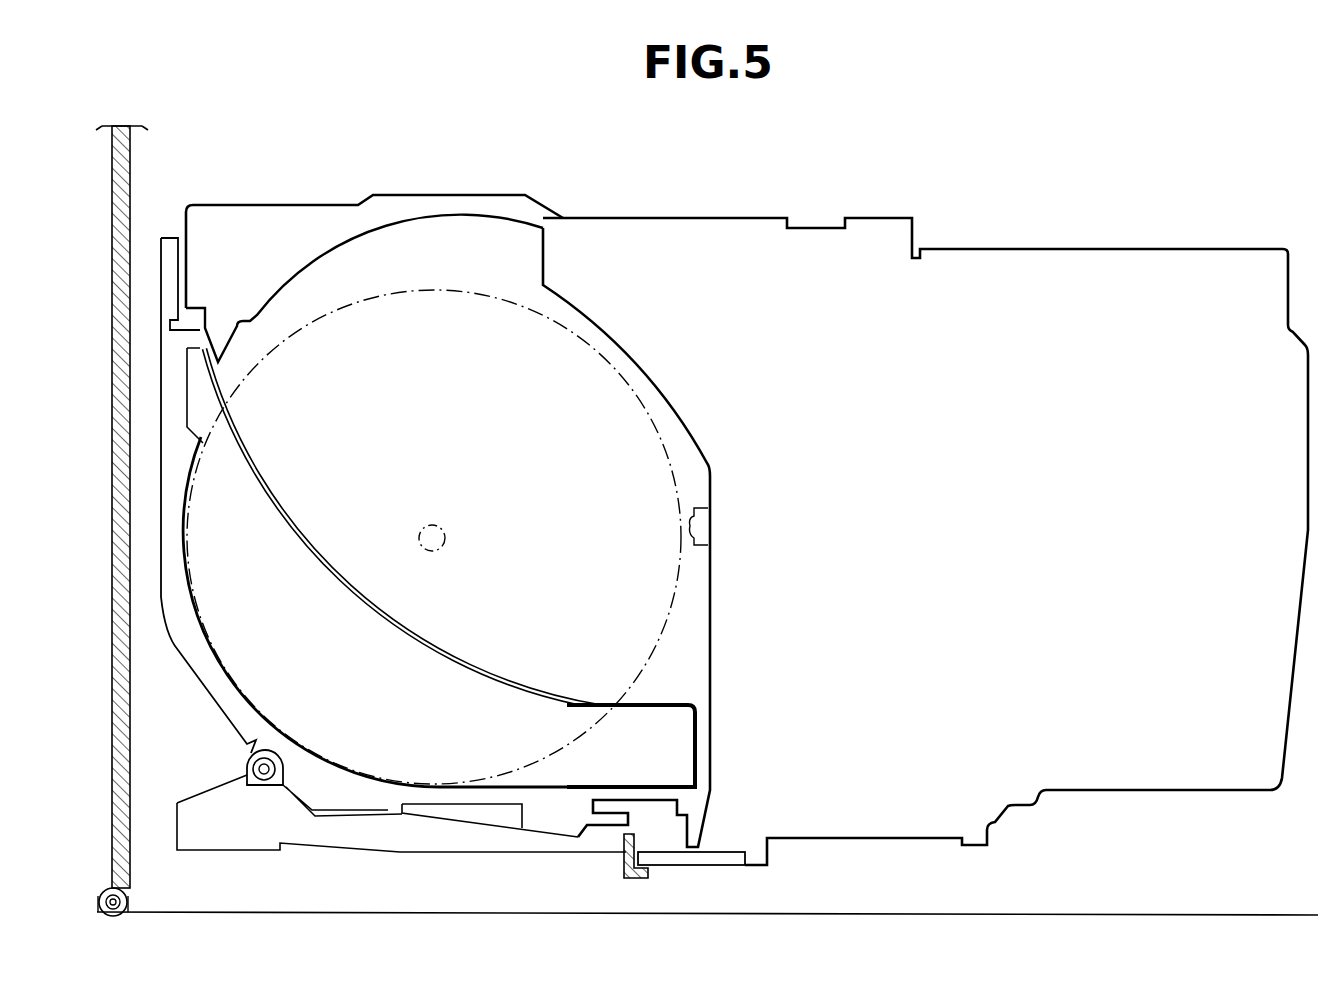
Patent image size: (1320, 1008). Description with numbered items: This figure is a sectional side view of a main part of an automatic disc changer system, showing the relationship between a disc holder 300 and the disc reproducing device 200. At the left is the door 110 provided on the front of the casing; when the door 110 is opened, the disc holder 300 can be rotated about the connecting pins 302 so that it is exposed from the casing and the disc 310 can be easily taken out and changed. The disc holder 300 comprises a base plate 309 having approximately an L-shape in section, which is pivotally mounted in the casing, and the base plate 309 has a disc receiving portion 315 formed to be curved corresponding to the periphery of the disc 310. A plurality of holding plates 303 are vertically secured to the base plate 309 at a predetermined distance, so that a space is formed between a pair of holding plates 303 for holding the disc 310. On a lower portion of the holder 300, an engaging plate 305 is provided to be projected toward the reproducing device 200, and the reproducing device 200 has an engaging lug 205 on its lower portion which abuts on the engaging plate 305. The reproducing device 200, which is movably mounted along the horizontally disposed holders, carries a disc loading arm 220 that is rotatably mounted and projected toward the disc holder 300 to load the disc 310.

The door 110 is at (128, 662).
The disc reproducing device 200 is at (1005, 235).
The engaging lug 205 is at (711, 860).
The disc loading arm 220 is at (292, 205).
The disc holder 300 is at (170, 238).
The connecting pin 302 is at (249, 759).
The holding plate 303 is at (452, 660).
The engaging plate 305 is at (624, 866).
The base plate 309 is at (568, 787).
The disc 310 is at (612, 424).
The disc receiving portion 315 is at (311, 748).